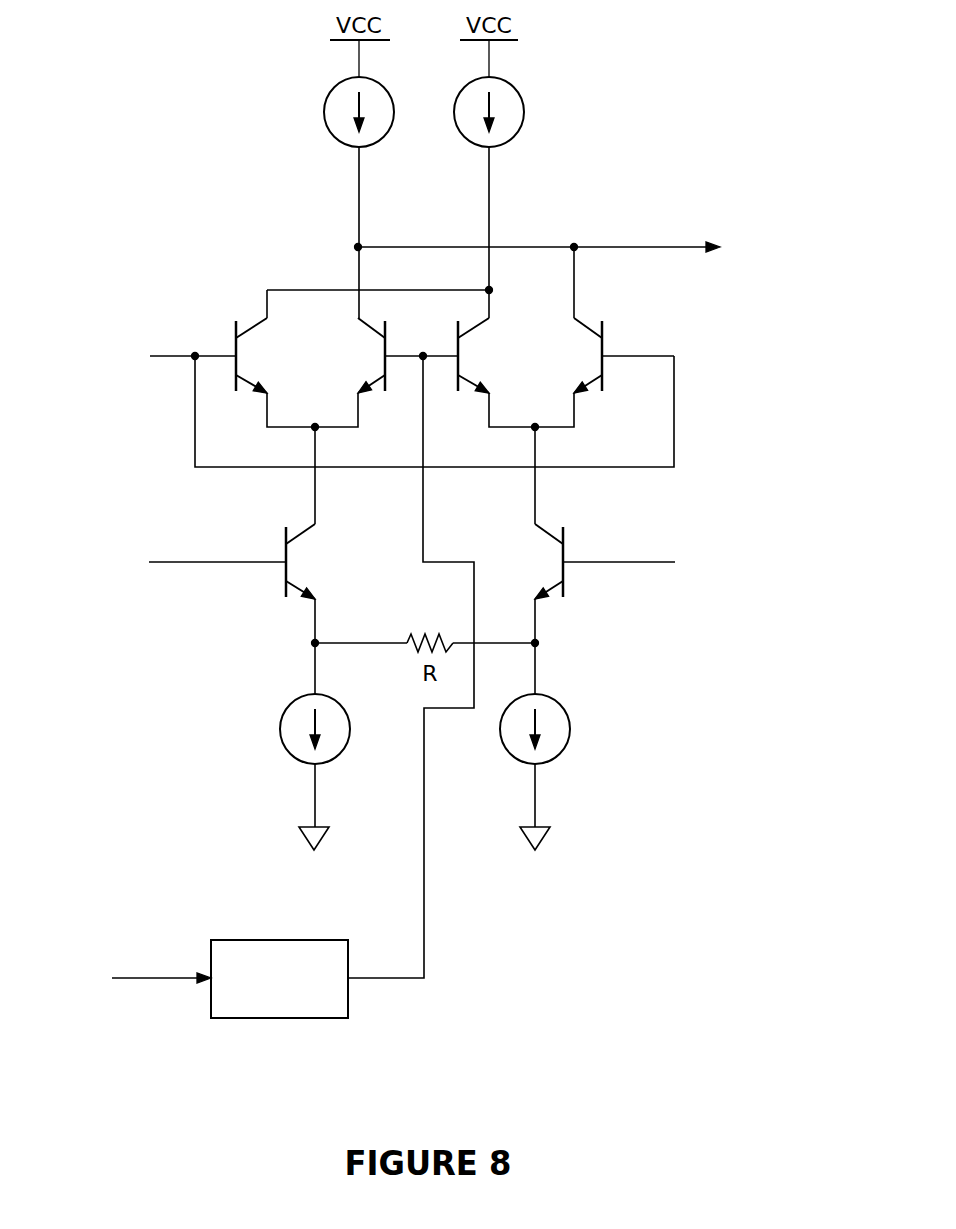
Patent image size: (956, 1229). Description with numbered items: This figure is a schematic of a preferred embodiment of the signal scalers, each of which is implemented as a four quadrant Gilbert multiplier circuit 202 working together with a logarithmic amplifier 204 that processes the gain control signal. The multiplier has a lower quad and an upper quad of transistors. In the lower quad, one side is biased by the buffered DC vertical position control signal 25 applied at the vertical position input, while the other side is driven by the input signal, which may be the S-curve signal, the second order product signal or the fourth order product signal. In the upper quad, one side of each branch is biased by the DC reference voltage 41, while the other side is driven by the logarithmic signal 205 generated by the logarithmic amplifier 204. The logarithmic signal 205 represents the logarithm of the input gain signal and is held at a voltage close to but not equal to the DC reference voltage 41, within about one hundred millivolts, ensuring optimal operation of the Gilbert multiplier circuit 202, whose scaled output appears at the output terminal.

The four quadrant Gilbert multiplier circuit 202 is at (397, 233).
The DC reference voltage 41 is at (170, 355).
The buffered DC vertical position signal VP 25 is at (622, 563).
The logarithmic amplifier 204 is at (307, 939).
The logarithmic signal 205 is at (425, 950).